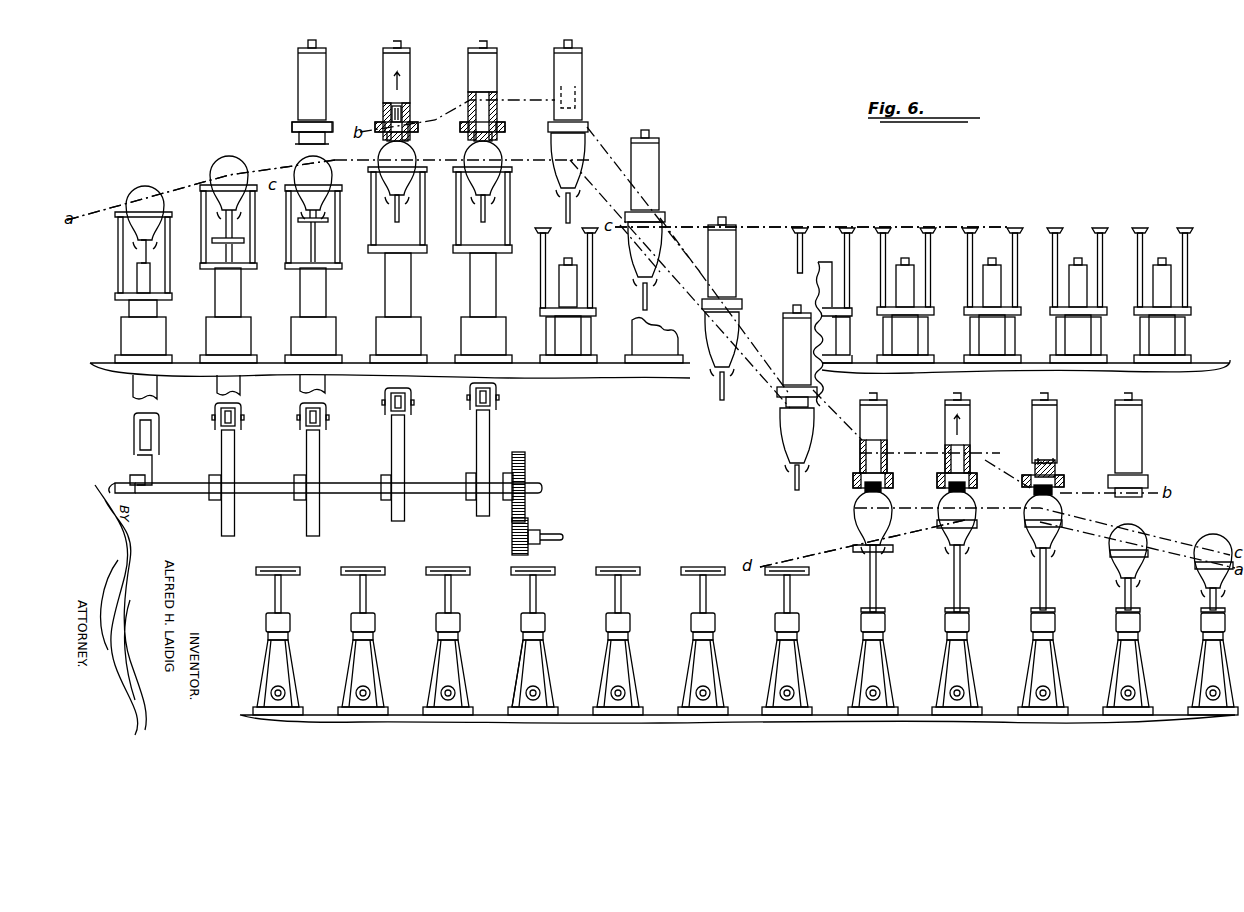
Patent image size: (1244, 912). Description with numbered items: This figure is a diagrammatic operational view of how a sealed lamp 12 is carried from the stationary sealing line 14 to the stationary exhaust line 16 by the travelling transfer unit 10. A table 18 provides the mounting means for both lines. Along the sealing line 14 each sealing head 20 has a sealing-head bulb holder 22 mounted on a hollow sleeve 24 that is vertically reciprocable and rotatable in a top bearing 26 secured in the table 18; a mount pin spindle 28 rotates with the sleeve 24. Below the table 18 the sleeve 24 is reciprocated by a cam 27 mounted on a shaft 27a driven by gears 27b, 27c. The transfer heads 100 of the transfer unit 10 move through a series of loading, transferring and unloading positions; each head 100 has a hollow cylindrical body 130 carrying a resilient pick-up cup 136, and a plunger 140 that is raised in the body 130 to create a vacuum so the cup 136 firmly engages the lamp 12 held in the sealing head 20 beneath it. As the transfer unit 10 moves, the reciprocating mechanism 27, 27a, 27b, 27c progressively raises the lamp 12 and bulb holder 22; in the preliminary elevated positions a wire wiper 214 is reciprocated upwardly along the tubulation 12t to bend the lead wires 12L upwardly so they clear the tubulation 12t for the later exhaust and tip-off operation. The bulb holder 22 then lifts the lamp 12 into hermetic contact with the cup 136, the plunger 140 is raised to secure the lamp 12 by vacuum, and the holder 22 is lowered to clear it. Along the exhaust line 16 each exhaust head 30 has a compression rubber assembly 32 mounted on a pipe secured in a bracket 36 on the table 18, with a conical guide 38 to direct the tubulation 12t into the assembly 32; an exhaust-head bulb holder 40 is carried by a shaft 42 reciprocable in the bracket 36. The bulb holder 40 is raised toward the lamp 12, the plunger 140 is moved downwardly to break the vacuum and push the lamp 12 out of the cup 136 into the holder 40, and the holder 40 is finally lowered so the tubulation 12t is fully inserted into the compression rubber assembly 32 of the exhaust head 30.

The transfer unit 10 is at (660, 210).
The lamp 12 is at (145, 188).
The lead wires 12L is at (230, 210).
The tubulation 12t is at (475, 222).
The sealing line 14 is at (192, 173).
The exhaust line 16 is at (521, 600).
The table 18 is at (560, 366).
The sealing head 20 is at (386, 276).
The sealing-head bulb holder 22 is at (118, 212).
The hollow sleeve 24 is at (128, 310).
The top bearing 26 is at (154, 330).
The cam 27 is at (148, 472).
The shaft 27a is at (346, 484).
The gear 27b is at (524, 458).
The gear 27c is at (527, 523).
The mount pin spindle 28 is at (150, 283).
The exhaust head 30 is at (433, 665).
The compression rubber assembly 32 is at (448, 620).
The bracket 36 is at (537, 665).
The conical guide 38 is at (796, 608).
The exhaust-head bulb holder 40 is at (697, 572).
The shaft 42 is at (281, 599).
The transfer head 100 is at (382, 71).
The hollow cylindrical body 130 is at (886, 412).
The pick-up cup 136 is at (393, 124).
The plunger 140 is at (404, 116).
The wire wiper 214 is at (228, 240).